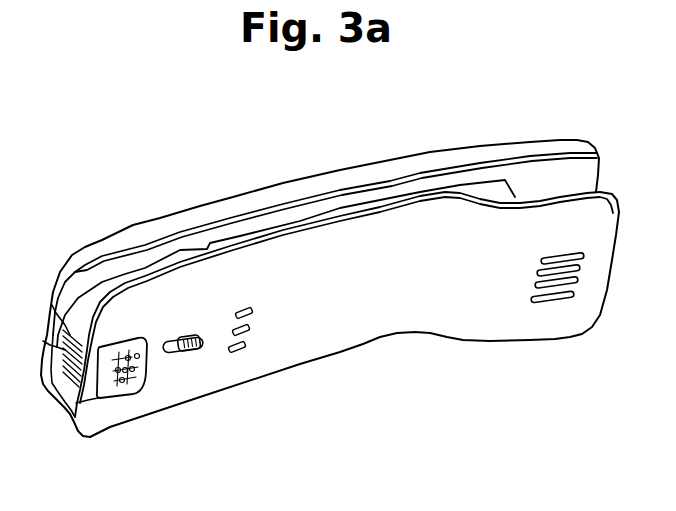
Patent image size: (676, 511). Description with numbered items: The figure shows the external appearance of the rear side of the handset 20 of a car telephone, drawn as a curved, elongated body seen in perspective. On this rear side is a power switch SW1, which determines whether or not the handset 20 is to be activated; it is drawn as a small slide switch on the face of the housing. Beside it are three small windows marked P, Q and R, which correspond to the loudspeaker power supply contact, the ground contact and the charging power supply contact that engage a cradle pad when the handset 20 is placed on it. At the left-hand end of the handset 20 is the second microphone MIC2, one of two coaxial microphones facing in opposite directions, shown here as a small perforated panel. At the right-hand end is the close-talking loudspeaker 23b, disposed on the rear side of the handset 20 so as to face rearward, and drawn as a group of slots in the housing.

The handset 20 is at (369, 160).
The second microphone MIC2 is at (120, 388).
The power switch SW1 is at (188, 356).
The close-talking loudspeaker 23b is at (553, 308).